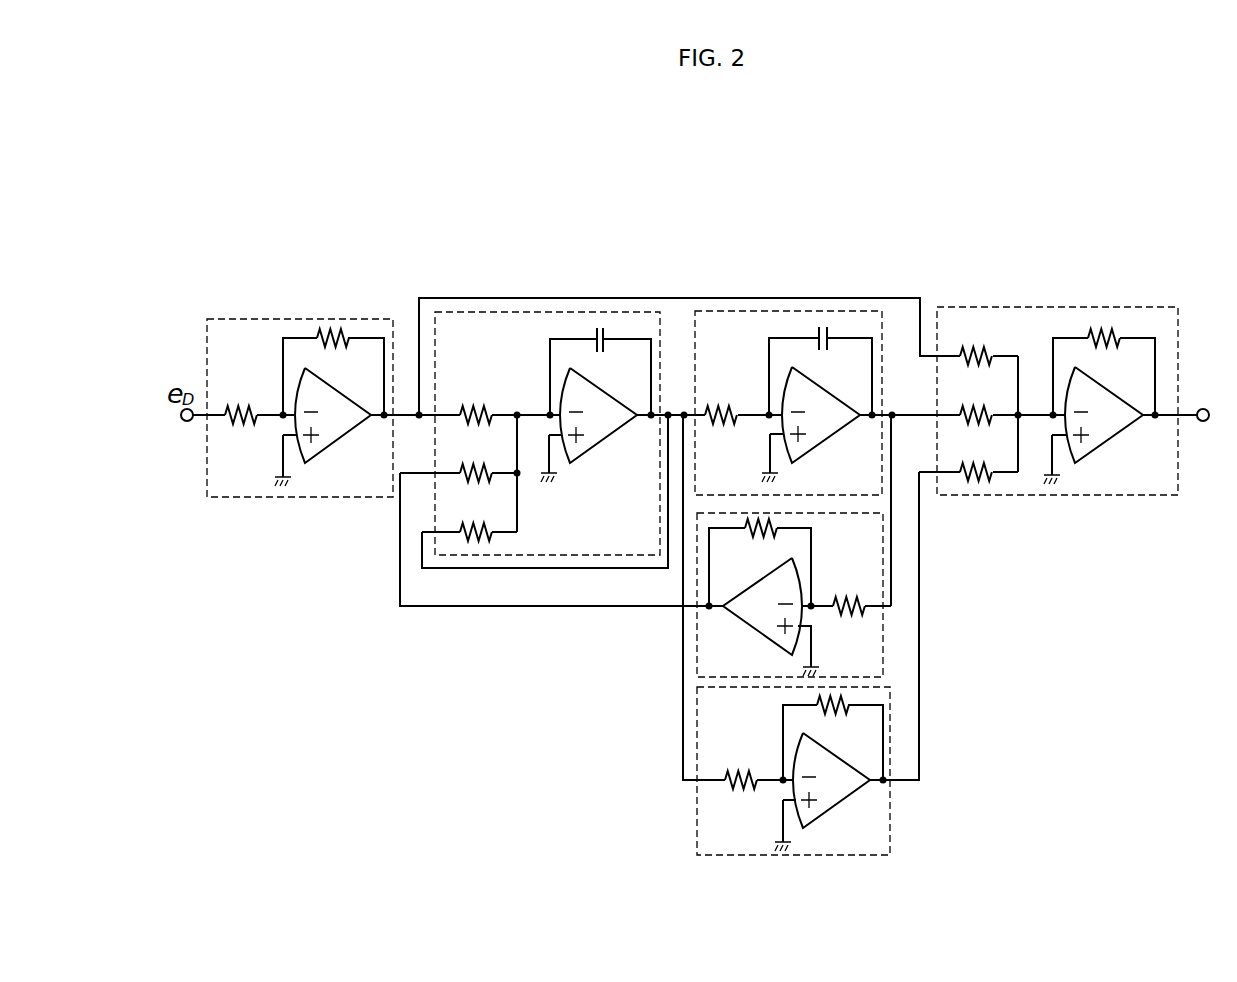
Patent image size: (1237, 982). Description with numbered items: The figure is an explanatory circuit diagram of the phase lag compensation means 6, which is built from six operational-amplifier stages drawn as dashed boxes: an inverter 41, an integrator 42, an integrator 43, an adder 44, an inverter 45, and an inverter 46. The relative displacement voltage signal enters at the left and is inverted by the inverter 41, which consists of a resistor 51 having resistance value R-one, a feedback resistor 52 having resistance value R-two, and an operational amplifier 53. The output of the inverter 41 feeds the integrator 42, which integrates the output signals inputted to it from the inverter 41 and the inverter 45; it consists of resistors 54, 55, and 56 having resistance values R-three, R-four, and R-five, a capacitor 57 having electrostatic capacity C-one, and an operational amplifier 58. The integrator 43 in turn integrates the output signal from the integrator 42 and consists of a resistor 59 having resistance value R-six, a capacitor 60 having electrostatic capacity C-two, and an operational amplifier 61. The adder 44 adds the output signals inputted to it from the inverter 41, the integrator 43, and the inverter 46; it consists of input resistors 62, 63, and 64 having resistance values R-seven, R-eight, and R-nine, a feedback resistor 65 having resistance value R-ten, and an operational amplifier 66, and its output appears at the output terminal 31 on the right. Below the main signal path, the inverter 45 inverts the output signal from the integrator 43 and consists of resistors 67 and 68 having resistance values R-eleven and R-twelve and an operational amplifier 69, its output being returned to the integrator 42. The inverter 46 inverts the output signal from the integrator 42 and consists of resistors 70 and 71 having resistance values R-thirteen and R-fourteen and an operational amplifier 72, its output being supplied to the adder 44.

The phase lag compensation means 6 is at (526, 664).
The output terminal 31 is at (1208, 409).
The inverter 41 is at (285, 319).
The integrator 42 is at (540, 311).
The integrator 43 is at (778, 311).
The adder 44 is at (1050, 307).
The inverter 45 is at (883, 645).
The inverter 46 is at (890, 830).
The resistor 51 is at (245, 405).
The resistor 52 is at (340, 330).
The operational amplifier 53 is at (336, 430).
The resistor 54 is at (468, 405).
The resistor 55 is at (492, 481).
The resistor 56 is at (492, 538).
The capacitor 57 is at (603, 325).
The operational amplifier 58 is at (600, 432).
The resistor 59 is at (718, 405).
The capacitor 60 is at (825, 325).
The operational amplifier 61 is at (828, 432).
The resistor 62 is at (970, 348).
The resistor 63 is at (960, 407).
The resistor 64 is at (975, 481).
The resistor 65 is at (1108, 330).
The operational amplifier 66 is at (1113, 432).
The resistor 67 is at (865, 613).
The resistor 68 is at (777, 522).
The operational amplifier 69 is at (750, 617).
The resistor 70 is at (730, 790).
The resistor 71 is at (848, 700).
The operational amplifier 72 is at (835, 796).